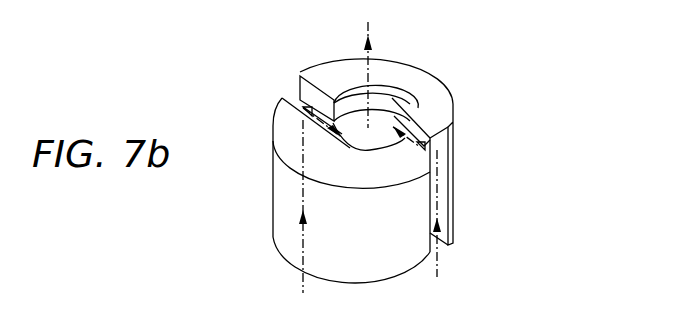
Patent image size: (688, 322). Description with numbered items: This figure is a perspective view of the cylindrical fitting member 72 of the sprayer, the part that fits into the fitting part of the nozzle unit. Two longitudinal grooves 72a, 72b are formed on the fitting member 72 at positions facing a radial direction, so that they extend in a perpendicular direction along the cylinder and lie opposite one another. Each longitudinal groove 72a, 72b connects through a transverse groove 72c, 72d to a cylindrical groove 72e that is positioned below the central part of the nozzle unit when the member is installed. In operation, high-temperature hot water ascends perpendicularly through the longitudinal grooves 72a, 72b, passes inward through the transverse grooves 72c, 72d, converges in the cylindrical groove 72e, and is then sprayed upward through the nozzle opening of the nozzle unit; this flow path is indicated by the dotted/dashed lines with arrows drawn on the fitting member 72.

The fitting member 72 is at (399, 150).
The longitudinal groove 72a is at (430, 150).
The longitudinal groove 72b is at (290, 109).
The transverse groove 72c is at (422, 140).
The transverse groove 72d is at (318, 98).
The cylindrical groove 72e is at (378, 128).